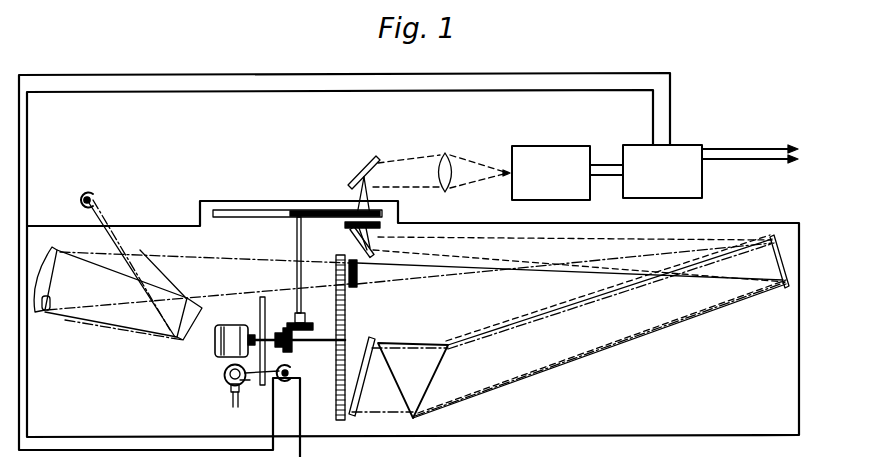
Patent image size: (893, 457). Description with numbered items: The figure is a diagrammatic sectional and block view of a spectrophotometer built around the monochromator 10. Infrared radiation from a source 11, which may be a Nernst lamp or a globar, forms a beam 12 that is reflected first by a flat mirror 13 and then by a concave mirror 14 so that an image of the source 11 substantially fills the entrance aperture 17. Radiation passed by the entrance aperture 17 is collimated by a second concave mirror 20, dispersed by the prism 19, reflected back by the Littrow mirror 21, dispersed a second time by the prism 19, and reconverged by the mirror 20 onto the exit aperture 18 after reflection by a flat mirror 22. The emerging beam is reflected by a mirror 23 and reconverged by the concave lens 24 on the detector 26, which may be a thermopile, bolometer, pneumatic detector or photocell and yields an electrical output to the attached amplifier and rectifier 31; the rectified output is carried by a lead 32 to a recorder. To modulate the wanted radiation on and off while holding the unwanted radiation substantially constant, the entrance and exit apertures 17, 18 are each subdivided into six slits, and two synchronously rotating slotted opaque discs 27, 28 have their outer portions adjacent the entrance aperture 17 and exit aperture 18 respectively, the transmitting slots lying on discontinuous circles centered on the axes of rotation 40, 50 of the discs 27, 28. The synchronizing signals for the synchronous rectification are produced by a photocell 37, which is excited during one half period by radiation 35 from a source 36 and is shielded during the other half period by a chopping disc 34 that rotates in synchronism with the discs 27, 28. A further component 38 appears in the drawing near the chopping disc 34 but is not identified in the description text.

The monochromator 10 is at (223, 199).
The source 11 is at (93, 191).
The beam 12 is at (134, 250).
The flat mirror 13 is at (191, 340).
The concave mirror 14 is at (44, 315).
The entrance aperture 17 is at (358, 274).
The exit aperture 18 is at (382, 226).
The prism 19 is at (400, 380).
The second concave mirror 20 is at (785, 292).
The Littrow mirror 21 is at (362, 385).
The flat mirror 22 is at (352, 241).
The mirror 23 is at (357, 168).
The concave lens 24 is at (449, 158).
The detector 26 is at (548, 146).
The opaque disc 27 is at (346, 306).
The opaque disc 28 is at (216, 218).
The amplifier and rectifier 31 is at (635, 144).
The lead 32 is at (747, 162).
The chopping disc 34 is at (266, 320).
The radiation 35 is at (255, 384).
The source 36 is at (225, 378).
The photocell 37 is at (289, 382).
The motor 38 is at (232, 325).
The axis of rotation 40 is at (322, 335).
The axis of rotation 50 is at (297, 235).